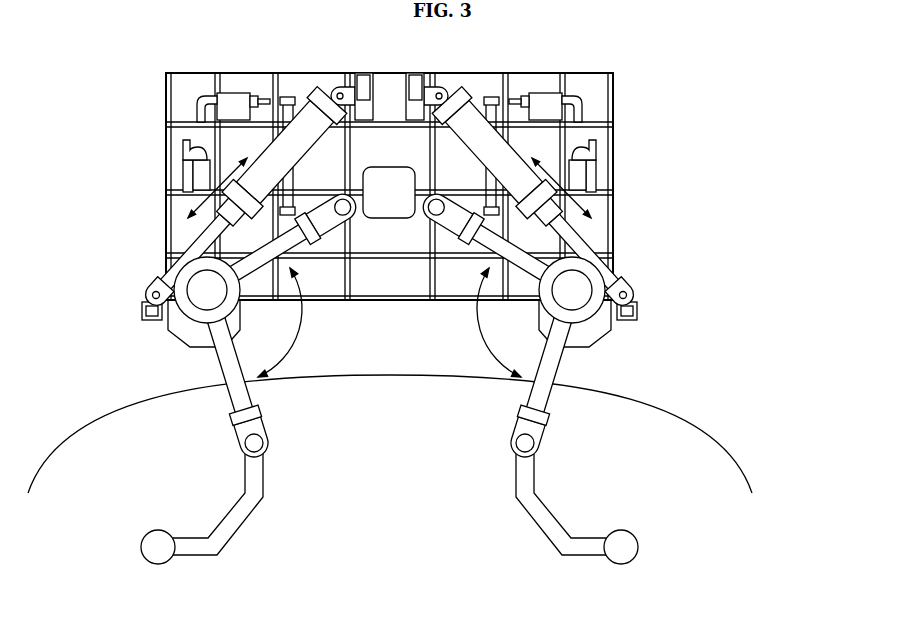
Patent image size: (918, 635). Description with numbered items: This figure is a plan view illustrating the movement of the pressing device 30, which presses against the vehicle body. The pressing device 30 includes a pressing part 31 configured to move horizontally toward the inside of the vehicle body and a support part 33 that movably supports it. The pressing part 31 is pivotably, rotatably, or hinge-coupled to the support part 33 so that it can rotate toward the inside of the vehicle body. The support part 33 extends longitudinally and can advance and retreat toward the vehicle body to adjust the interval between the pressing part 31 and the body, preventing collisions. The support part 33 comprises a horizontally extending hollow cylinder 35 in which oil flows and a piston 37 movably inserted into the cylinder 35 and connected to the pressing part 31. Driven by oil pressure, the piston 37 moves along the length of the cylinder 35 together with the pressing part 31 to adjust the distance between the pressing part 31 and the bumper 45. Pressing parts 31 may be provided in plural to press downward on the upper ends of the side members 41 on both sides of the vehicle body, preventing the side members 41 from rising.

The pressing device 30 is at (461, 272).
The pressing part 31 is at (440, 357).
The support part 33 is at (436, 196).
The cylinder 35 is at (508, 163).
The piston 37 is at (577, 242).
The side members 41 is at (550, 525).
The bumper 45 is at (740, 462).